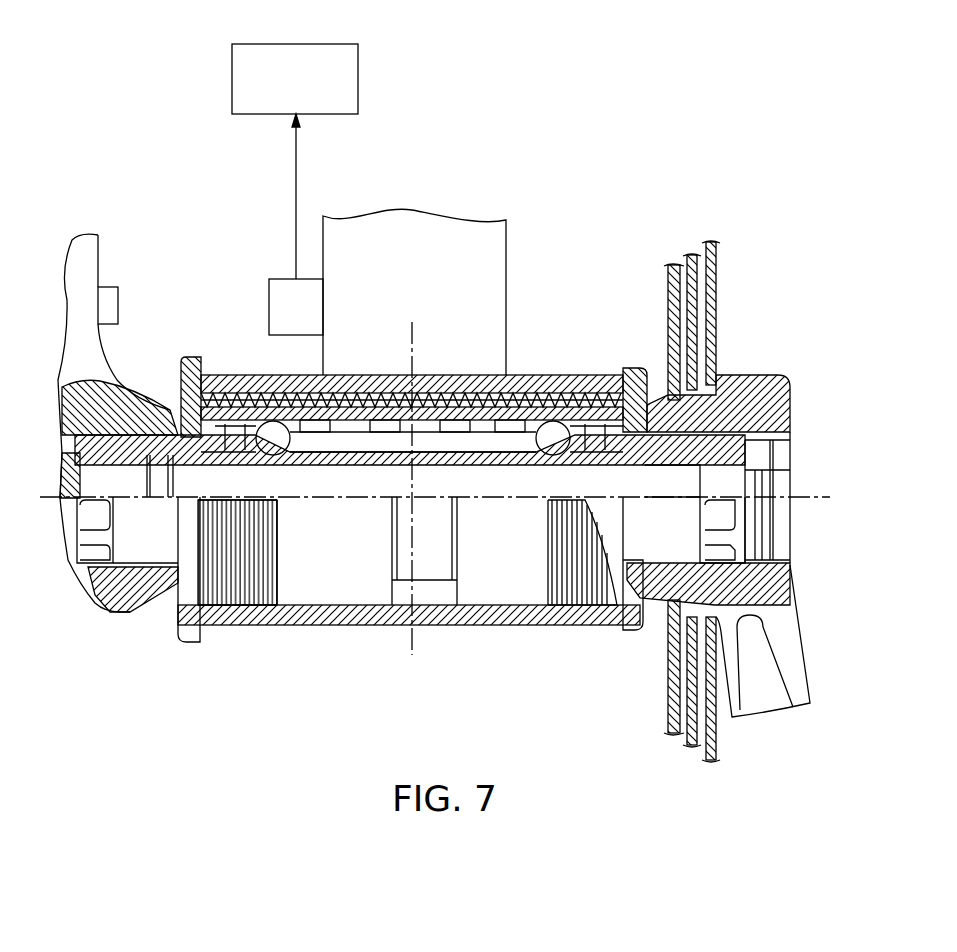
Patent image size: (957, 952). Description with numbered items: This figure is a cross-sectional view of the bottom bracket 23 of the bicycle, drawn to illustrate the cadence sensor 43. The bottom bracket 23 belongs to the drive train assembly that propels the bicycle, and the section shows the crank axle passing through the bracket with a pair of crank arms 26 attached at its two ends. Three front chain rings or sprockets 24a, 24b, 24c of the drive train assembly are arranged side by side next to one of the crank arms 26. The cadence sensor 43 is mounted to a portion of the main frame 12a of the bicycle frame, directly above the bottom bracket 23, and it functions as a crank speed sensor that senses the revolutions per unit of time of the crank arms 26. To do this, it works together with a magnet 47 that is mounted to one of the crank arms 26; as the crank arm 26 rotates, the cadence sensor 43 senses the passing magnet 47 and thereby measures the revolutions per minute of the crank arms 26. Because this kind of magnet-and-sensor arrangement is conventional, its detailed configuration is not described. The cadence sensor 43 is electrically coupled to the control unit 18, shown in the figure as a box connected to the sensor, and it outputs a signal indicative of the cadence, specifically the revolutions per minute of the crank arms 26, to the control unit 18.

The control unit 18 is at (325, 44).
The cadence sensor 43 is at (269, 310).
The main frame 12a is at (507, 232).
The bottom bracket 23 is at (561, 298).
The front chain ring 24a is at (716, 297).
The front chain ring 24b is at (697, 346).
The front chain ring 24c is at (670, 318).
The crank arm 26 is at (100, 260).
The magnet 47 is at (118, 305).